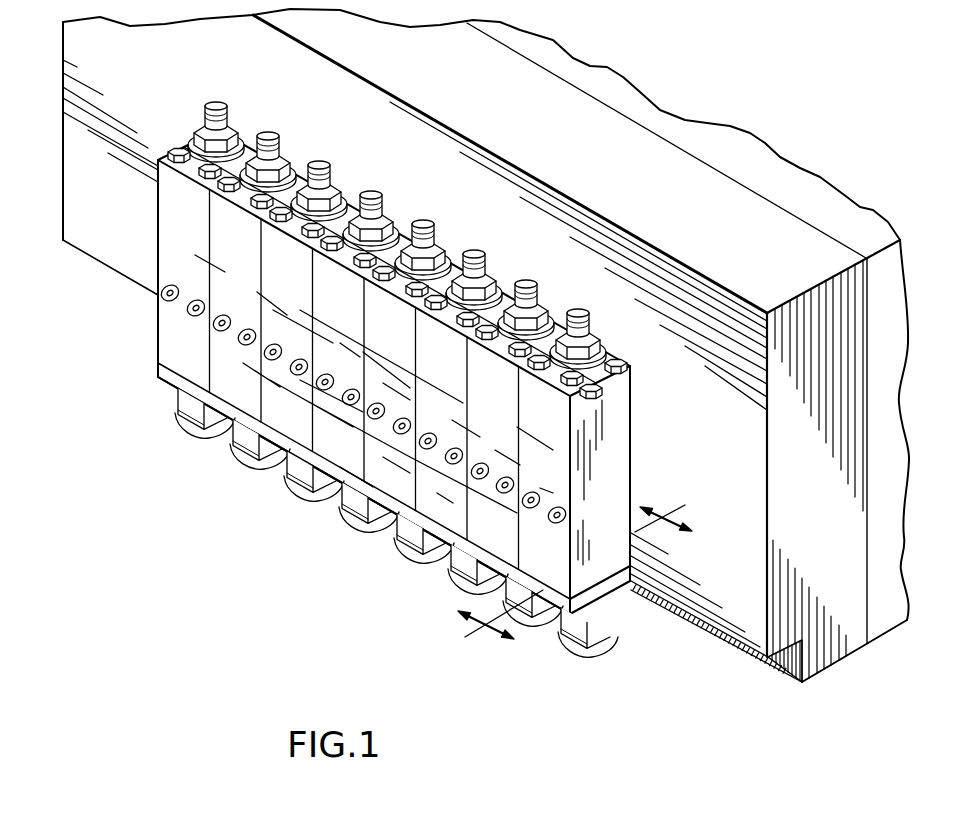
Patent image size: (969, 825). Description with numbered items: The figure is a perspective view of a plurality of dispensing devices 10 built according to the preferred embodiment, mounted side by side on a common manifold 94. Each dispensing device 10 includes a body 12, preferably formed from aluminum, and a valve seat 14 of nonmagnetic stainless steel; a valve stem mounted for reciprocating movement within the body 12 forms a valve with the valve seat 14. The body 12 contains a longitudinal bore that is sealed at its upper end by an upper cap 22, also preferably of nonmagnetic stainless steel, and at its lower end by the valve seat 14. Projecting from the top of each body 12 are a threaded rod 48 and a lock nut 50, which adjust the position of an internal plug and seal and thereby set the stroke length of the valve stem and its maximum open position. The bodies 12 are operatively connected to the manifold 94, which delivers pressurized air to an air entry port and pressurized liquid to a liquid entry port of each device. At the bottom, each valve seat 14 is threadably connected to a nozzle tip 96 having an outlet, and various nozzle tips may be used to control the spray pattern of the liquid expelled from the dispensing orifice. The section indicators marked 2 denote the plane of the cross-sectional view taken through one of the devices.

The dispensing device 10 is at (229, 353).
The body 12 is at (283, 412).
The valve seat 14 is at (173, 380).
The upper cap 22 is at (198, 198).
The threaded rod 48 is at (213, 107).
The lock nut 50 is at (235, 128).
The manifold 94 is at (572, 162).
The nozzle tip 96 is at (337, 508).
The section line 2- 2 is at (585, 596).